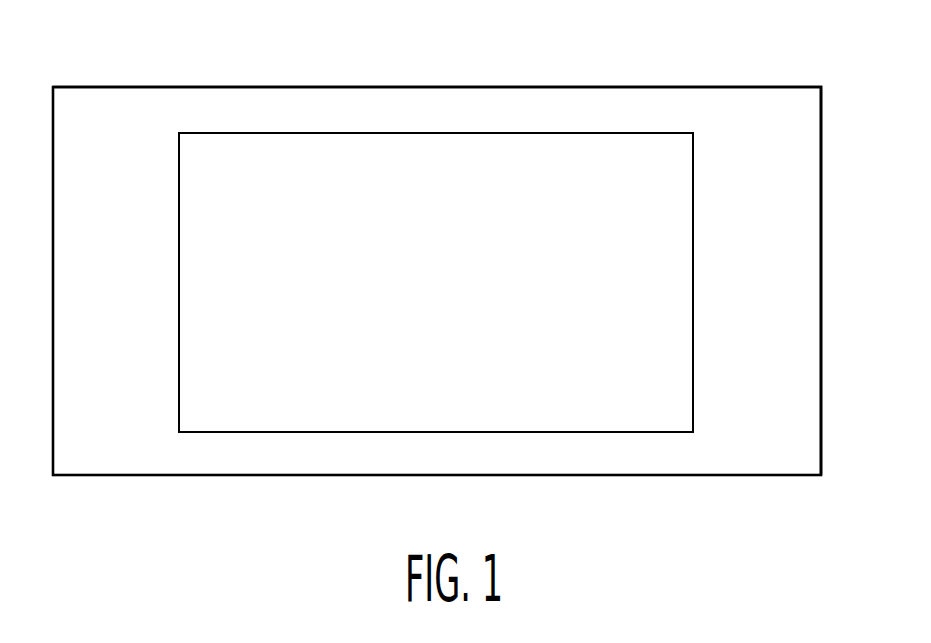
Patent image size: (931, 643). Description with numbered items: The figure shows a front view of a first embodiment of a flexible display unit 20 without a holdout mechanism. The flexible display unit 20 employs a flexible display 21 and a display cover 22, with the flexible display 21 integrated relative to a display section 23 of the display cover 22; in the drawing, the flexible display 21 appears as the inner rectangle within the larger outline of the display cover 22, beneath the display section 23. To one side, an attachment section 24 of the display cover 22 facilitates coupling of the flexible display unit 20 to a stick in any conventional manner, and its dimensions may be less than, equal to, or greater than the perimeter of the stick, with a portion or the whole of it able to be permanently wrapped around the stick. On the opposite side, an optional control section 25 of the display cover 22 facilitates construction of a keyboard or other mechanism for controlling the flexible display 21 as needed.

The flexible display unit 20 is at (98, 66).
The flexible display 21 is at (452, 290).
The display cover 22 is at (660, 86).
The display section 23 is at (452, 124).
The attachment section 24 is at (129, 290).
The control section 25 is at (769, 290).